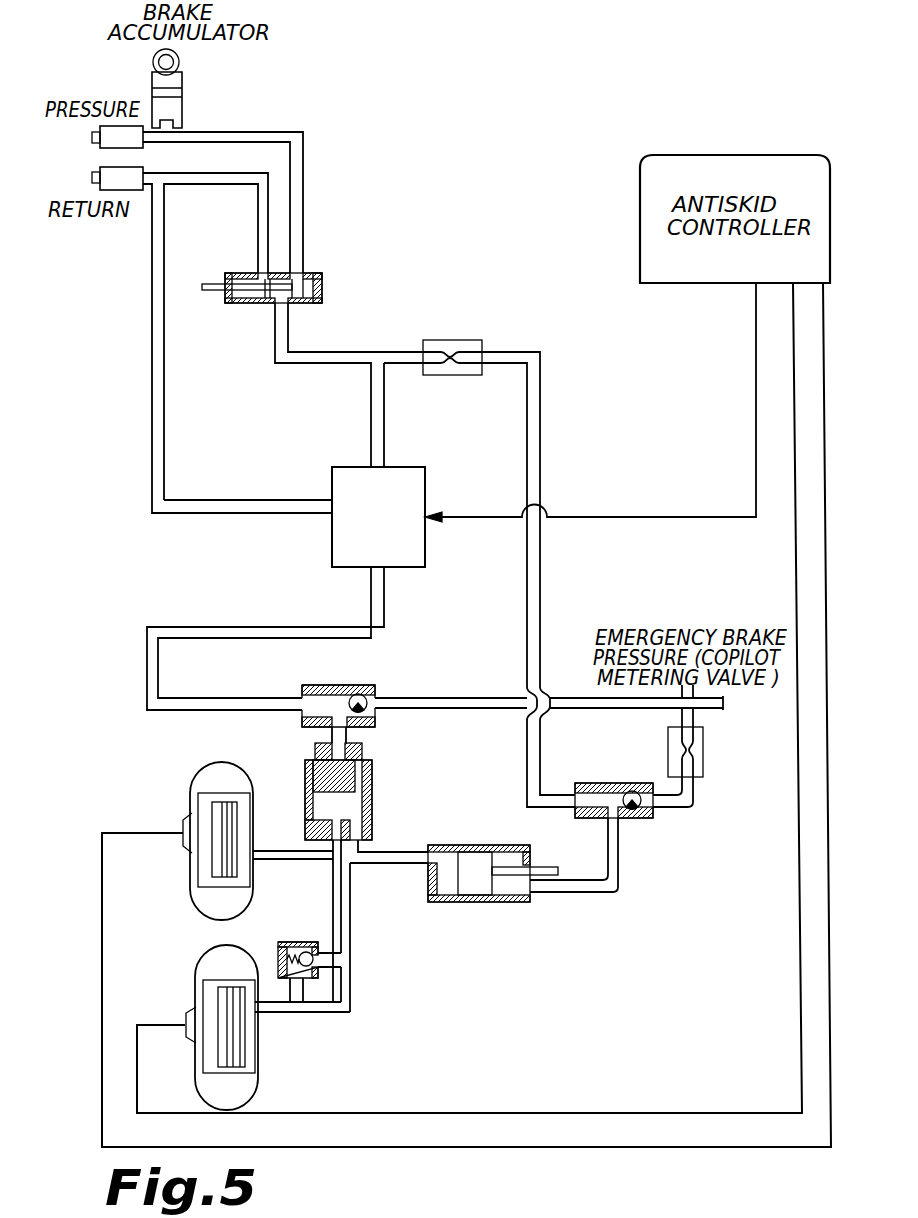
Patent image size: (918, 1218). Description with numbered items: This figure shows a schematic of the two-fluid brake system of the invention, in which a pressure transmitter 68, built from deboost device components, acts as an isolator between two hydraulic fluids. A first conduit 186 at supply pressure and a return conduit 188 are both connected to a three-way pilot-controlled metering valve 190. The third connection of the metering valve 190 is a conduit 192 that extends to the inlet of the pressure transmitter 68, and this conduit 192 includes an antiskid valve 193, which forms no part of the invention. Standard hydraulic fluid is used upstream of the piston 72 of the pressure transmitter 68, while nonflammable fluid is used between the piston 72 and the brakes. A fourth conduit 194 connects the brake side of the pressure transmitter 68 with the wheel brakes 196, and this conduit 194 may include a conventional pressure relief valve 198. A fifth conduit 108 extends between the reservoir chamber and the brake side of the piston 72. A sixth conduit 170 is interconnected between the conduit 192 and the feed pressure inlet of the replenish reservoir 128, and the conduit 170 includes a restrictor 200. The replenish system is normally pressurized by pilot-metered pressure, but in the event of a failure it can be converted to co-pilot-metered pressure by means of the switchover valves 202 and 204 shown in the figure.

The first conduit 186 is at (225, 130).
The return conduit 188 is at (197, 185).
The three-way pilot-controlled metering valve 190 is at (322, 282).
The conduit 192 is at (288, 327).
The antiskid valve 193 is at (425, 477).
The restrictor 200 is at (450, 370).
The conduit 170 is at (543, 600).
The switchover valve 202 is at (377, 690).
The piston 72 is at (315, 757).
The pressure transmitter 68 is at (372, 772).
The conduit 108 is at (400, 857).
The conduit 194 is at (343, 915).
The wheel brakes 196 is at (235, 820).
The pressure relief valve 198 is at (278, 952).
The switchover valve 204 is at (652, 818).
The replenish reservoir 128 is at (459, 906).